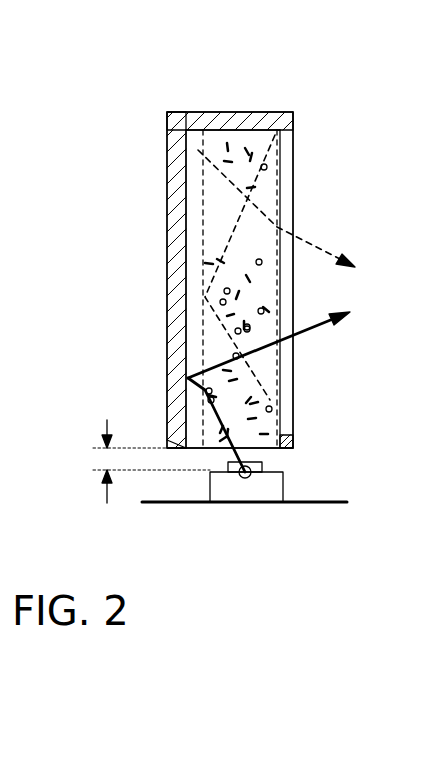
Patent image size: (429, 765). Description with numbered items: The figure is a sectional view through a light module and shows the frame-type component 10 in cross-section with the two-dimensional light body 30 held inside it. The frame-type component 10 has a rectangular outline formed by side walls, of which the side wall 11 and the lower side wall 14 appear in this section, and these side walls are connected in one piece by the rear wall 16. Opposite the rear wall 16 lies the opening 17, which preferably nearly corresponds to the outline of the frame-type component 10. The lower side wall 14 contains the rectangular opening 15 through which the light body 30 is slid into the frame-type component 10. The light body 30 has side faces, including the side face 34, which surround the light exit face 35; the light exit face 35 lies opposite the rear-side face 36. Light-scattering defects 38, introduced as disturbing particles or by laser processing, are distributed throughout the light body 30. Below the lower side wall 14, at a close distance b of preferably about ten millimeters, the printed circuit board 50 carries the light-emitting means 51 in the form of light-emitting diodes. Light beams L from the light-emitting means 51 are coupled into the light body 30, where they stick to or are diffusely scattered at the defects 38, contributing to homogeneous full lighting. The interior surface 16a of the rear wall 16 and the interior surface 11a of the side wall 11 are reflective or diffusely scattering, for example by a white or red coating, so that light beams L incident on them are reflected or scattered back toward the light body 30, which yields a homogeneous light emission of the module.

The frame-type component 10 is at (153, 89).
The side wall 11 is at (233, 120).
The interior surface of the side wall 11a is at (268, 130).
The opening 17 is at (286, 146).
The rear wall 16 is at (180, 180).
The interior surface of the rear wall 16a is at (186, 239).
The opening 15 is at (197, 449).
The lower side wall 14 is at (177, 450).
The two-dimensional light body 30 is at (203, 136).
The rear-side face 36 is at (203, 308).
The light exit face 35 is at (275, 263).
The light-scattering defects 38 is at (262, 245).
The light beams L is at (205, 390).
The side face 34 is at (212, 450).
The light-emitting means 51 is at (283, 481).
The printed circuit board 50 is at (362, 486).
The distance b is at (107, 461).